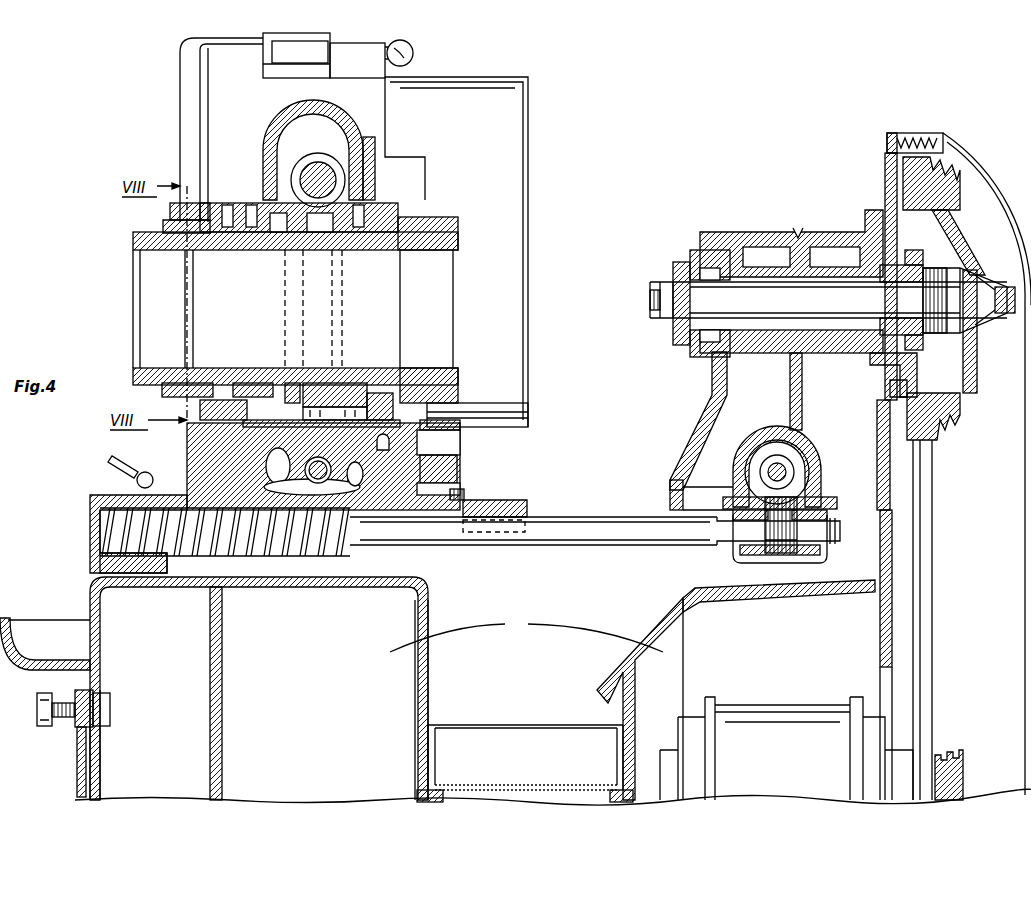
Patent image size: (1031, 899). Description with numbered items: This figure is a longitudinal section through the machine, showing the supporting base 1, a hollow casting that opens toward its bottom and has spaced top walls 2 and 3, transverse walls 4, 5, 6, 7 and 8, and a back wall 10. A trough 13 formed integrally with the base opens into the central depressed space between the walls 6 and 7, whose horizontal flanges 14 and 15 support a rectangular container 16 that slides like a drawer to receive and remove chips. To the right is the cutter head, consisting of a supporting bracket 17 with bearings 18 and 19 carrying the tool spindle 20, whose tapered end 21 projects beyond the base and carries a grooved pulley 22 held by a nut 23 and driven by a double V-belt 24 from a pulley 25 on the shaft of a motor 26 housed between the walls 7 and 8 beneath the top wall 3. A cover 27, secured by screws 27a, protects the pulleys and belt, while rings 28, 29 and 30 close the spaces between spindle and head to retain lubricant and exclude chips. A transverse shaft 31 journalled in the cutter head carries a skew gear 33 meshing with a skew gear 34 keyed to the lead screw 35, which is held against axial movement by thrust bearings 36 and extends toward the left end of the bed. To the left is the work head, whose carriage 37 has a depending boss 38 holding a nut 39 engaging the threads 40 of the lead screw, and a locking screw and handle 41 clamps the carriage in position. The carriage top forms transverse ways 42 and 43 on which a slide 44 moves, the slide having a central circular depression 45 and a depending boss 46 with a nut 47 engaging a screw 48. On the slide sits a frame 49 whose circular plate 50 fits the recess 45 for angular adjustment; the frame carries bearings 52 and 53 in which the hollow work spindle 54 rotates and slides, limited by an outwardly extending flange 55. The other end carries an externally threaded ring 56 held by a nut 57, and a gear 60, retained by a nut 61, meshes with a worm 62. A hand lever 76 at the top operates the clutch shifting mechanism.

The supporting base 1 is at (526, 634).
The top wall 2 is at (312, 588).
The top wall 3 is at (752, 592).
The transverse wall 4 is at (101, 665).
The transverse wall 5 is at (222, 662).
The transverse wall 6 is at (415, 700).
The transverse wall 7 is at (631, 700).
The transverse wall 8 is at (880, 650).
The back wall 10 is at (317, 771).
The trough 13 is at (28, 640).
The horizontal flange 14 is at (418, 795).
The horizontal flange 15 is at (612, 790).
The rectangular container 16 is at (525, 730).
The supporting bracket 17 is at (707, 398).
The bearing 18 is at (730, 232).
The bearing 19 is at (878, 356).
The tool spindle 20 is at (835, 312).
The tapered end of spindle 21 is at (972, 312).
The pulley 22 is at (958, 406).
The nut 23 is at (1010, 282).
The double V-belt 24 is at (920, 585).
The motor pulley 25 is at (948, 750).
The motor 26 is at (790, 720).
The cover 27 is at (955, 150).
The screws 27a is at (882, 140).
The ring 28 is at (664, 265).
The ring 29 is at (695, 250).
The ring 30 is at (915, 265).
The transverse shaft 31 is at (766, 470).
The skew gear 33 is at (795, 470).
The skew gear 34 is at (815, 555).
The lead screw 35 is at (582, 525).
The thrust bearings 36 is at (770, 575).
The carriage 37 is at (470, 492).
The depending boss 38 is at (148, 578).
The nut 39 is at (90, 505).
The threads 40 is at (262, 560).
The locking screw and handle 41 is at (124, 467).
The transverse way 42 is at (192, 455).
The transverse way 43 is at (457, 465).
The transversely movable slide 44 is at (460, 440).
The central circular depression 45 is at (325, 415).
The depending boss 46 is at (272, 481).
The nut 47 is at (331, 476).
The screw 48 is at (376, 444).
The frame 49 is at (440, 400).
The circular plate 50 is at (290, 420).
The bearing 52 is at (243, 368).
The bearing 53 is at (390, 368).
The hollow work spindle 54 is at (445, 270).
The outwardly extending flange 55 is at (460, 222).
The externally threaded ring 56 is at (192, 236).
The internally threaded ring 57 is at (162, 228).
The gear 60 is at (345, 250).
The internally threaded ring 61 is at (270, 250).
The worm 62 is at (322, 155).
The hand lever 76 is at (411, 46).